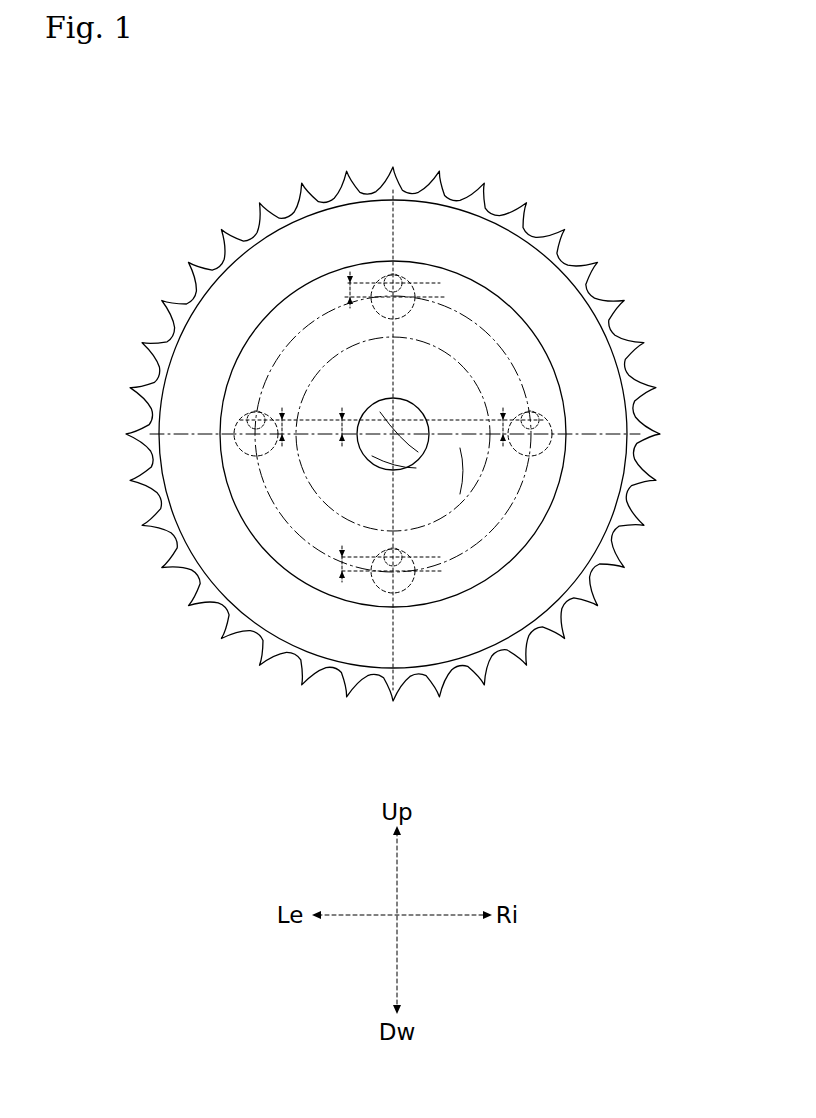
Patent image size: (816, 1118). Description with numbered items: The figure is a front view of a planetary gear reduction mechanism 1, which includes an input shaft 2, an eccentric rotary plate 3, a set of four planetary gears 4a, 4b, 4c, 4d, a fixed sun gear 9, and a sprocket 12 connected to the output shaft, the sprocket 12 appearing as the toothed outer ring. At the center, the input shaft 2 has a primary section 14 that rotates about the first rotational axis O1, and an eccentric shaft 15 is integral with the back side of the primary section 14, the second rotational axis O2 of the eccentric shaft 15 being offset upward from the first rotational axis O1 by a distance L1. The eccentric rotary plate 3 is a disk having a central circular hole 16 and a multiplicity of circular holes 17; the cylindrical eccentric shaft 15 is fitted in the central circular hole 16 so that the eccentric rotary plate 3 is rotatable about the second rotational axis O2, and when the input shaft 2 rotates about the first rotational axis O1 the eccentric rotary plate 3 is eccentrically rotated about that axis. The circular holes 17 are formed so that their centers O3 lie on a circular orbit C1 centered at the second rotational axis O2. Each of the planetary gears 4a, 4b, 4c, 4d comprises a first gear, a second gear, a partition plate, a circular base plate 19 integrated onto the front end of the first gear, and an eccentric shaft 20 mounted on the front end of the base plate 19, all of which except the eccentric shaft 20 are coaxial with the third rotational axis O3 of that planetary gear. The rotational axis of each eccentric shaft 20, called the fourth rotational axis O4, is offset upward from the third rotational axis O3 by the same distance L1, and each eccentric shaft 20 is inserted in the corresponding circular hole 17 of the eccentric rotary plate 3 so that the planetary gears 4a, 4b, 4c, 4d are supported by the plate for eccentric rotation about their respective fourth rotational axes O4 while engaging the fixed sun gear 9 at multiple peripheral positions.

The planetary gear reduction mechanism 1 is at (150, 188).
The input shaft 2 is at (424, 455).
The eccentric rotary plate 3 is at (268, 590).
The planetary gear 4a is at (428, 282).
The planetary gear 4b is at (560, 466).
The planetary gear 4c is at (362, 578).
The planetary gear 4d is at (242, 418).
The fixed sun gear 9 is at (442, 566).
The sprocket 12 is at (612, 306).
The primary section 14 is at (418, 470).
The eccentric shaft 15 is at (420, 452).
The central circular hole 16 is at (381, 400).
The circular hole 17 is at (383, 268).
The circular base plate 19 is at (458, 287).
The eccentric shaft 20 is at (405, 272).
The circular orbit C1 is at (578, 263).
The offset distance L1 is at (393, 427).
The first rotational axis O1 is at (391, 437).
The second rotational axis O2 is at (396, 420).
The third rotational axis O3 is at (402, 320).
The fourth rotational axis O4 is at (410, 276).